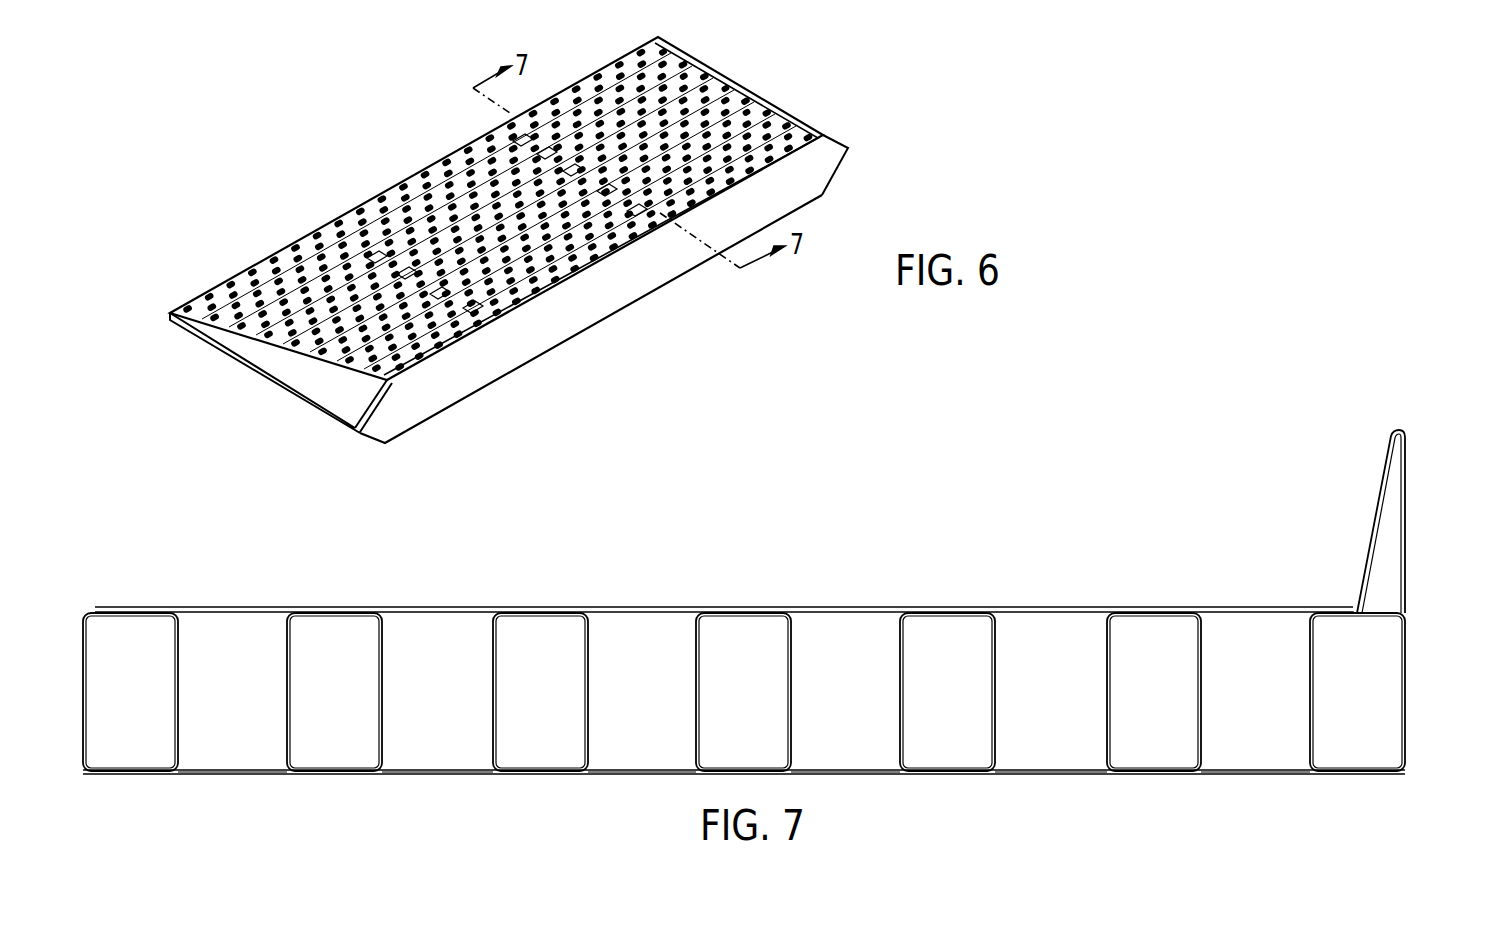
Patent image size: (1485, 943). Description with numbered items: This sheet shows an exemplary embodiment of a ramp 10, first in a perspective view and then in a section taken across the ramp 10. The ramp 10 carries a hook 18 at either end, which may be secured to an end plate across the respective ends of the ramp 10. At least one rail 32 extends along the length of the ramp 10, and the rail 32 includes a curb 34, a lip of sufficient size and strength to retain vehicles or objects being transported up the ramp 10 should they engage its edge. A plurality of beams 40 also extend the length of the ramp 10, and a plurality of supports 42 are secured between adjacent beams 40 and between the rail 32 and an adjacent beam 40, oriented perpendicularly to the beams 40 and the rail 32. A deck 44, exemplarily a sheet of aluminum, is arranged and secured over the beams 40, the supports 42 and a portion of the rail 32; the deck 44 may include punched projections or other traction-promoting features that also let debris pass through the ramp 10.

In FIG. 6, the ramp 10 is at (356, 182).
In FIG. 7, the ramp 10 is at (999, 545).
In FIG. 6, the hook 18 is at (297, 395).
In FIG. 6, the rail 32 is at (545, 330).
In FIG. 7, the rail 32 is at (1419, 683).
In FIG. 7, the curb 34 is at (1352, 497).
In FIG. 7, the beam 40 is at (128, 642).
In FIG. 7, the support 42 is at (222, 642).
In FIG. 6, the deck 44 is at (428, 173).
In FIG. 7, the deck 44 is at (937, 611).